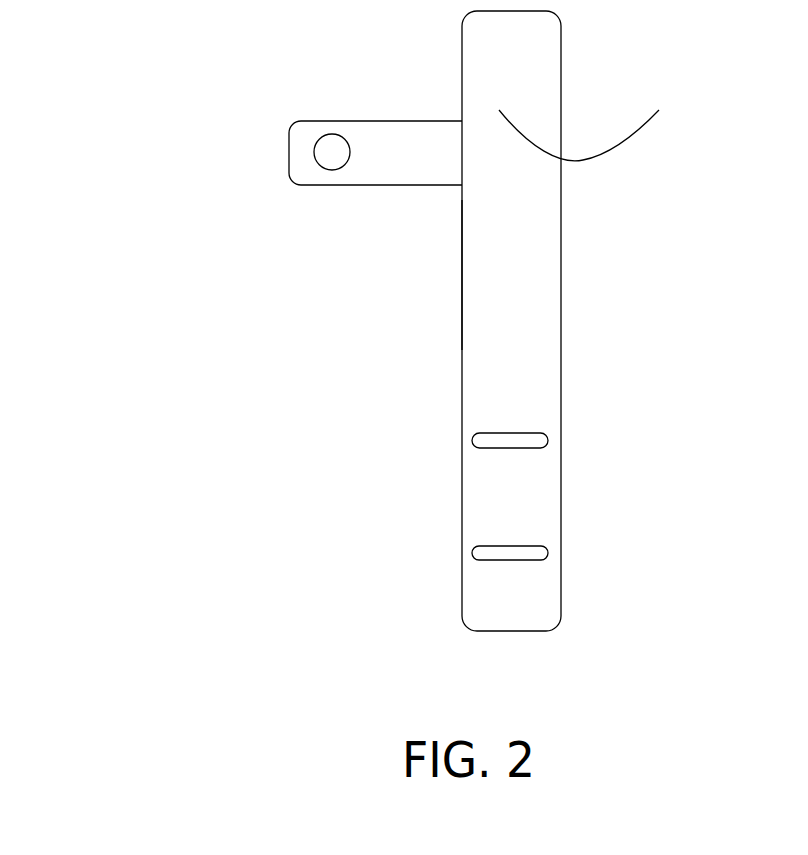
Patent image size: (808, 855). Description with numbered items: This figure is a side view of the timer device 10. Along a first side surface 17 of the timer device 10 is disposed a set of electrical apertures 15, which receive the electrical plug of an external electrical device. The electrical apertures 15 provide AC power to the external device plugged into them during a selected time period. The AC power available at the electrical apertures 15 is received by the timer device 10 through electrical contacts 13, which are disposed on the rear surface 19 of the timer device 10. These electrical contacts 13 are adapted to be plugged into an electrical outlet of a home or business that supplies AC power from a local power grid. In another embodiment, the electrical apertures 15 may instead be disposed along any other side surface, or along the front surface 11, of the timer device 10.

The timer device 10 is at (597, 322).
The front surface 11 is at (561, 228).
The electrical contacts 13 is at (303, 112).
The electrical apertures 15 is at (478, 443).
The first side surface 17 is at (603, 114).
The rear surface 19 is at (462, 272).